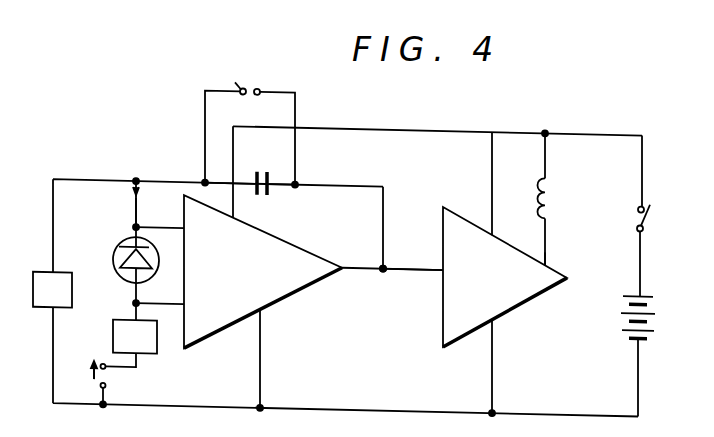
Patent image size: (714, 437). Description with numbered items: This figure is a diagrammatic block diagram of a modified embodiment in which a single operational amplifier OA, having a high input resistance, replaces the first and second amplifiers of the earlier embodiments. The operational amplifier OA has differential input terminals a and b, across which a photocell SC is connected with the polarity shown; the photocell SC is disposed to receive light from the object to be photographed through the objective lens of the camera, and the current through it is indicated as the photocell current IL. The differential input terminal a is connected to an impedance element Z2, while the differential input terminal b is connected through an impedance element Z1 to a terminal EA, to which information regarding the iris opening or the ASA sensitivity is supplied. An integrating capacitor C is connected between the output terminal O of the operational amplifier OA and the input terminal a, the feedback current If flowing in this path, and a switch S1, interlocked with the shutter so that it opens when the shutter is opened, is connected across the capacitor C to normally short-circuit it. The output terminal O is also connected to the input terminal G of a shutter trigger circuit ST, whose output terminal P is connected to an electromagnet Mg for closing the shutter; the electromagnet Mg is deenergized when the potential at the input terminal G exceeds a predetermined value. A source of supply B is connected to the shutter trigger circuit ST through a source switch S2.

The feedback current If is at (137, 178).
The photocell current IL is at (135, 193).
The differential input terminal a is at (160, 238).
The differential input terminal b is at (160, 317).
The photocell SC is at (113, 254).
The impedance element Z1 is at (143, 352).
The impedance element Z2 is at (40, 307).
The terminal EA is at (81, 382).
The switch S1 is at (250, 127).
The integrating capacitor C is at (263, 166).
The operational amplifier OA is at (263, 267).
The output terminal O is at (345, 262).
The input terminal of shutter trigger circuit G is at (440, 257).
The shutter trigger circuit ST is at (412, 98).
The electromagnet Mg is at (548, 196).
The output terminal of shutter trigger circuit P is at (546, 252).
The source switch S2 is at (636, 205).
The source of supply B is at (620, 292).